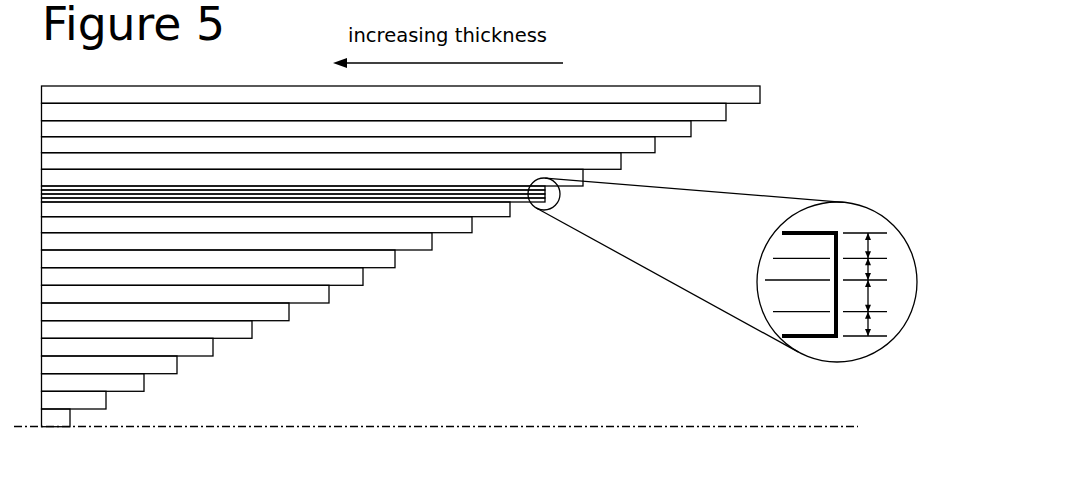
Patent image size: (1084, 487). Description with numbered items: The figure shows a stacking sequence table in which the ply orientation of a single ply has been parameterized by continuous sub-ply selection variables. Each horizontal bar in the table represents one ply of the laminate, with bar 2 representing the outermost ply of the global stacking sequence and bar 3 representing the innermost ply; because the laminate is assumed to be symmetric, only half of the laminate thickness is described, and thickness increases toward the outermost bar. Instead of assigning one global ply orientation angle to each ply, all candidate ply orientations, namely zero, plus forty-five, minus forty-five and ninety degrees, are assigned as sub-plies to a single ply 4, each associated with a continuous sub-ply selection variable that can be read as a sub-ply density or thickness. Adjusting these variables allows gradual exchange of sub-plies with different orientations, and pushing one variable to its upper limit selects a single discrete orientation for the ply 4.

The bar 2 is at (725, 90).
The bar 3 is at (55, 419).
The single ply 4 is at (517, 203).